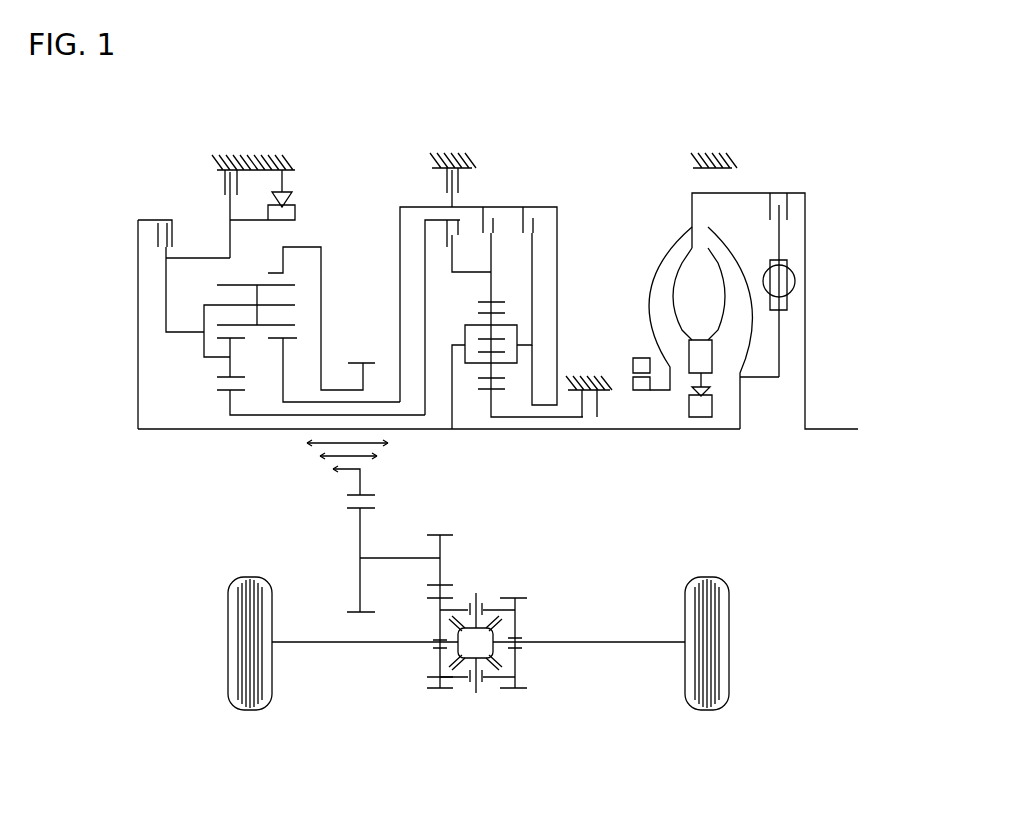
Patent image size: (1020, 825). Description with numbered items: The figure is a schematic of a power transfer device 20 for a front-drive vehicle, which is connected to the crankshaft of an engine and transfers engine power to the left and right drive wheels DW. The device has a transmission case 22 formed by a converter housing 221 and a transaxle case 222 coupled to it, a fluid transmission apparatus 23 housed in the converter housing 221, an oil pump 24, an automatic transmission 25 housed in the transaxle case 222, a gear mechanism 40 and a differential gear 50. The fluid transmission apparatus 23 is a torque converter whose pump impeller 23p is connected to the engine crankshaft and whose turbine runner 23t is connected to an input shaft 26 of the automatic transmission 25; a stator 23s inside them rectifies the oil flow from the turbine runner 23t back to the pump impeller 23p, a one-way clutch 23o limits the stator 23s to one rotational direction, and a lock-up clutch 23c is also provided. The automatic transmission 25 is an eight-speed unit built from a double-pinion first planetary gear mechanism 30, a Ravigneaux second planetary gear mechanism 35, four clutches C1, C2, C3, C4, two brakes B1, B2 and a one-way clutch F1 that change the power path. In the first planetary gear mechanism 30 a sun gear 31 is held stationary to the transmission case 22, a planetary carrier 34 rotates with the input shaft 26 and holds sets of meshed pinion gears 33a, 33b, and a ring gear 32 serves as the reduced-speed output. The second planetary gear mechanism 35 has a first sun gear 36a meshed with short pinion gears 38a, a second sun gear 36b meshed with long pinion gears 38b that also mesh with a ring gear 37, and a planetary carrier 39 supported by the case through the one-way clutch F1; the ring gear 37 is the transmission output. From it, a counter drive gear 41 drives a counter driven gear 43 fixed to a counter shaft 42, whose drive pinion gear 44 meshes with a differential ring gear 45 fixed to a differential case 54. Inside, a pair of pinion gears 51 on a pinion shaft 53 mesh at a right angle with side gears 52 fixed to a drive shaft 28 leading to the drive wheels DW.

The power transfer device 20 is at (540, 130).
The transmission case 22 is at (247, 153).
The automatic transmission 25 is at (373, 183).
The transaxle case 222 is at (448, 153).
The converter housing 221 is at (713, 155).
The fluid transmission apparatus 23 is at (689, 220).
The turbine runner 23t is at (733, 250).
The lock-up clutch 23c is at (789, 238).
The pump impeller 23p is at (668, 250).
The stator 23s is at (703, 345).
The one-way clutch 23o is at (720, 405).
The oil pump 24 is at (630, 380).
The input shaft 26 is at (712, 430).
The first planetary gear mechanism 30 is at (453, 328).
The sun gear 31 is at (476, 430).
The ring gear 32 is at (478, 301).
The pinion gear 33a is at (503, 352).
The pinion gear 33b is at (503, 313).
The planetary carrier 34 is at (518, 357).
The second planetary gear mechanism 35 is at (199, 388).
The first sun gear 36a is at (217, 392).
The second sun gear 36b is at (270, 340).
The ring gear 37 is at (288, 268).
The short pinion gear 38a is at (228, 362).
The long pinion gear 38b is at (217, 283).
The planetary carrier 39 is at (204, 316).
The gear mechanism 40 is at (346, 530).
The counter drive gear 41 is at (347, 495).
The counter shaft 42 is at (390, 558).
The counter driven gear 43 is at (360, 558).
The drive pinion gear 44 is at (453, 534).
The differential ring gear 45 is at (436, 689).
The differential gear 50 is at (536, 622).
The pinion gear 51 is at (496, 598).
The side gear 52 is at (457, 640).
The pinion shaft 53 is at (488, 660).
The differential case 54 is at (460, 605).
The drive shaft 28 is at (331, 648).
The brake B1 is at (460, 186).
The brake B2 is at (222, 186).
The clutch C1 is at (448, 238).
The clutch C2 is at (158, 235).
The clutch C3 is at (498, 223).
The clutch C4 is at (538, 222).
The one-way clutch F1 is at (296, 210).
The drive wheel DW is at (228, 642).